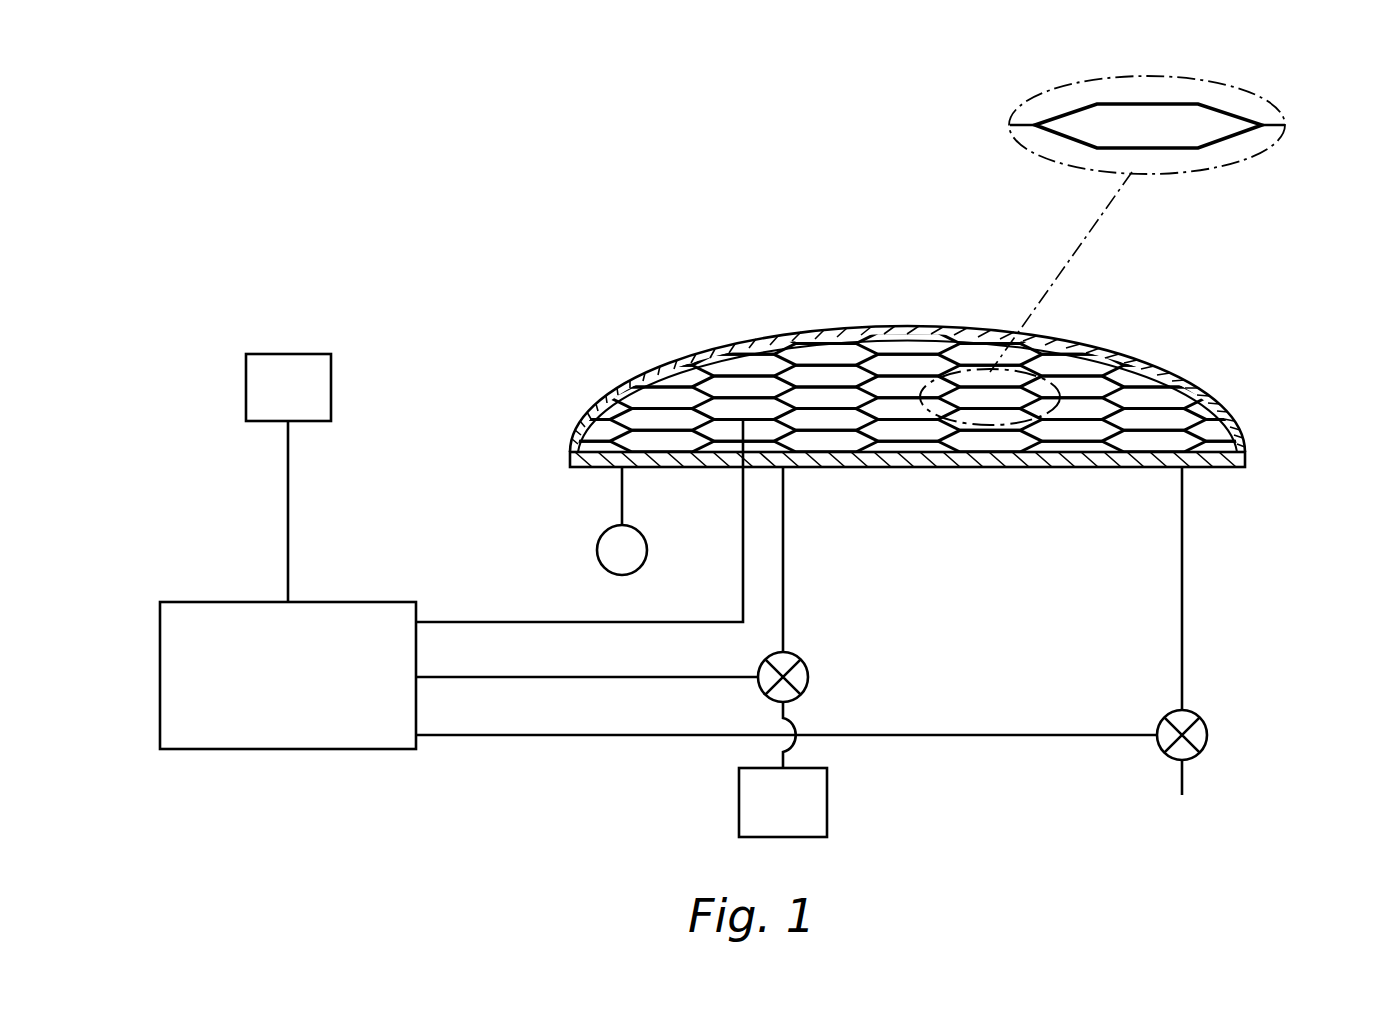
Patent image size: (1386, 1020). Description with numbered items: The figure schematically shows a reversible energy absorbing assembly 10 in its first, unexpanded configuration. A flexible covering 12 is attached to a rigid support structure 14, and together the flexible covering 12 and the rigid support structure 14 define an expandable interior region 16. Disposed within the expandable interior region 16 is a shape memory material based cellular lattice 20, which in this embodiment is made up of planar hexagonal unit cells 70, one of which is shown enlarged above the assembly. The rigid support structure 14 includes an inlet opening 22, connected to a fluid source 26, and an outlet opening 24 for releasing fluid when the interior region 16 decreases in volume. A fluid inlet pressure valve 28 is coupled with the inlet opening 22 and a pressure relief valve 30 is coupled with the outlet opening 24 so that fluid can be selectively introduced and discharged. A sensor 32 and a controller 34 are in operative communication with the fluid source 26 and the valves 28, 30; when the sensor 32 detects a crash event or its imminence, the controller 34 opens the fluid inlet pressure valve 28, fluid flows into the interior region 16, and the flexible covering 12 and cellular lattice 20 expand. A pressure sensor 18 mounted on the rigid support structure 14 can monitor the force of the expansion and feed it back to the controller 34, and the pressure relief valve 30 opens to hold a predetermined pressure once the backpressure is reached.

The reversible energy absorbing assembly 10 is at (923, 358).
The flexible covering 12 is at (1163, 367).
The rigid support structure 14 is at (962, 467).
The expandable interior region 16 is at (838, 392).
The pressure sensor 18 is at (597, 551).
The shape memory material based cellular lattice 20 is at (912, 388).
The inlet opening 22 is at (783, 467).
The outlet opening 24 is at (1182, 467).
The fluid source 26 is at (827, 803).
The fluid inlet pressure valve 28 is at (808, 677).
The pressure relief valve 30 is at (1202, 727).
The sensor 32 is at (287, 354).
The controller 34 is at (210, 602).
The planar hexagonal unit cell 70 is at (1065, 112).